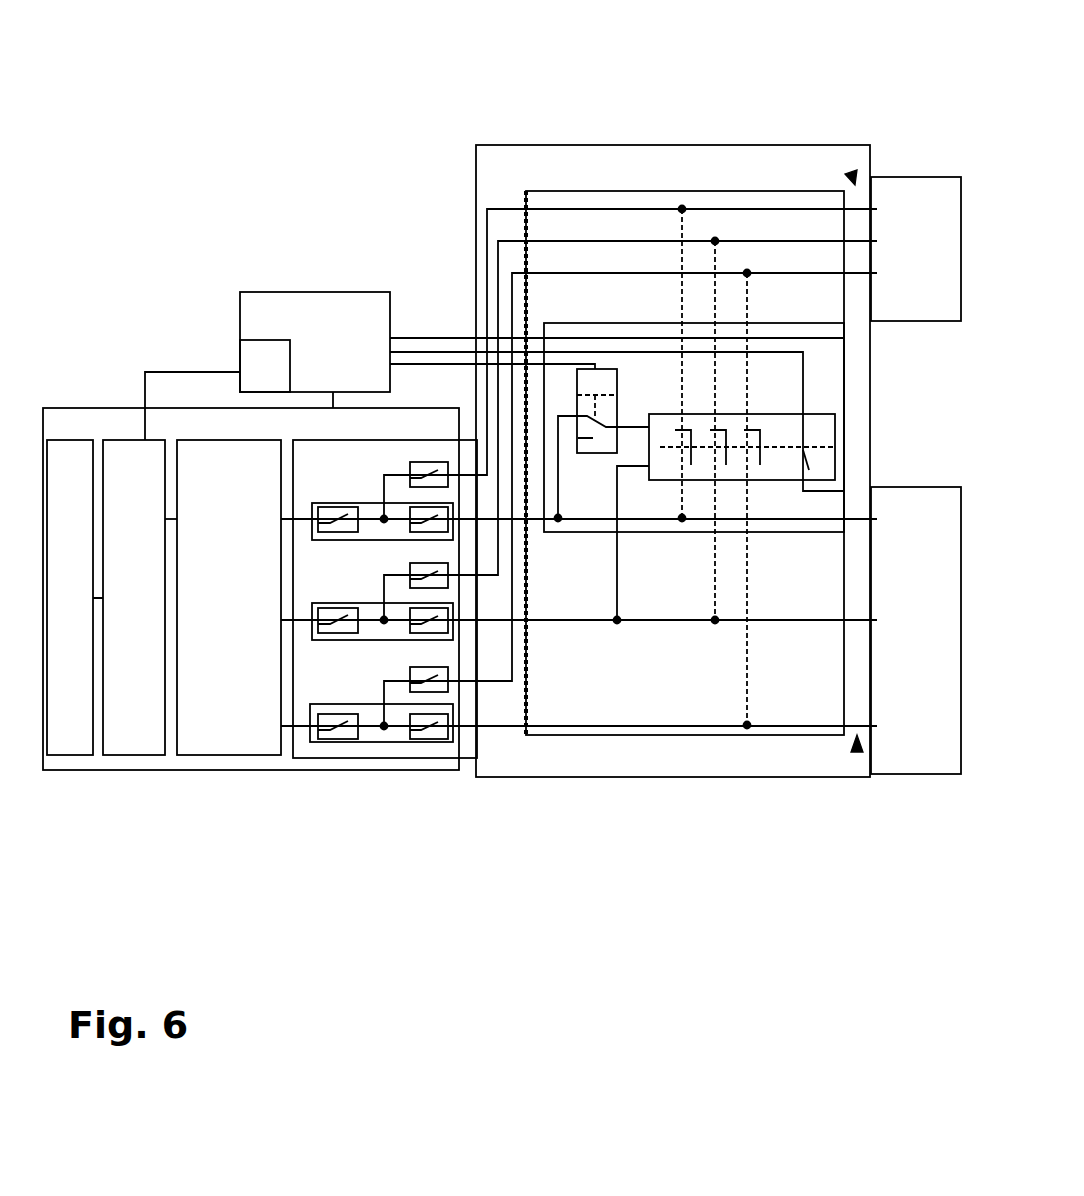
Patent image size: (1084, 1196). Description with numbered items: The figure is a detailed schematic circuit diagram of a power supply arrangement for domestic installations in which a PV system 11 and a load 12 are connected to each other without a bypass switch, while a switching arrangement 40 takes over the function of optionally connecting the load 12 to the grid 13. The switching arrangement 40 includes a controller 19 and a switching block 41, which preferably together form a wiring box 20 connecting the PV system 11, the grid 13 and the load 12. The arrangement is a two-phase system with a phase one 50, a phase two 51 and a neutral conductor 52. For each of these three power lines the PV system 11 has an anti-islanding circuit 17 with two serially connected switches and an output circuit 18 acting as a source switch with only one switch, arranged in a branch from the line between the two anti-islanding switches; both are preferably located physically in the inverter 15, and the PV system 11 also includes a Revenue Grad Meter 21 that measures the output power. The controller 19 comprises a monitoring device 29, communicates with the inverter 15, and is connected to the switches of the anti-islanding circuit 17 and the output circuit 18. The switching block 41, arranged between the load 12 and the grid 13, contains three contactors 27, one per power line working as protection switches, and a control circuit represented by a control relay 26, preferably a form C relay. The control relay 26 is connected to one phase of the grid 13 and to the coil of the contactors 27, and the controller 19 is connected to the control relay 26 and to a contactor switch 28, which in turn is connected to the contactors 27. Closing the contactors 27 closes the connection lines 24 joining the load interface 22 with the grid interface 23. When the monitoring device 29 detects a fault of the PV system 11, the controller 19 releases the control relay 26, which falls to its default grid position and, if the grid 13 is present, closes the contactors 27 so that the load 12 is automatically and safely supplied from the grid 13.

The PV system 11 is at (457, 410).
The load 12 is at (892, 187).
The grid 13 is at (905, 775).
The inverter 15 is at (128, 455).
The anti-islanding circuit 17 is at (316, 542).
The output circuit 18 is at (413, 487).
The controller 19 is at (320, 310).
The wiring box 20 is at (713, 190).
The Revenue Grad Meter 21 is at (200, 440).
The load interface 22 is at (850, 175).
The grid interface 23 is at (860, 752).
The connection lines 24 is at (682, 520).
The control relay 26 is at (602, 377).
The contactors 27 is at (707, 432).
The contactor switch 28 is at (807, 473).
The monitoring device 29 is at (258, 355).
The switching arrangement 40 is at (652, 145).
The switching block 41 is at (633, 323).
The phase one 50 is at (756, 208).
The phase two 51 is at (787, 240).
The neutral conductor 52 is at (824, 273).